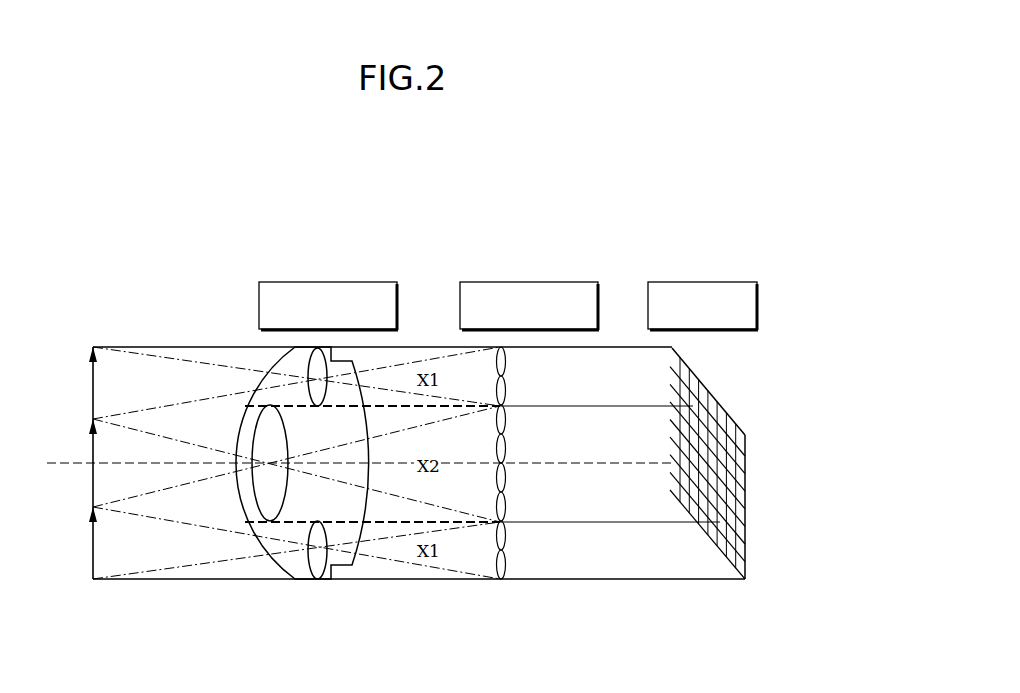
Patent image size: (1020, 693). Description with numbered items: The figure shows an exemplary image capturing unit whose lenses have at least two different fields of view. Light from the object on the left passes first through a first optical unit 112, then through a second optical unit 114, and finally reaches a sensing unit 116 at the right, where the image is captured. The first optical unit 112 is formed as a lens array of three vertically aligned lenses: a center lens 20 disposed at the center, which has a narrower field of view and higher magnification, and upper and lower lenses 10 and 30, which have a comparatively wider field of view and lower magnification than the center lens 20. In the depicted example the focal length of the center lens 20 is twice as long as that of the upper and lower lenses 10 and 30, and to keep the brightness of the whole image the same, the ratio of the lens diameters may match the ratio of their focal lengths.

The upper lens 10 is at (318, 366).
The center lens 20 is at (267, 435).
The lower lens 30 is at (317, 566).
The first optical unit 112 is at (313, 282).
The second optical unit 114 is at (517, 282).
The sensing unit 116 is at (703, 282).